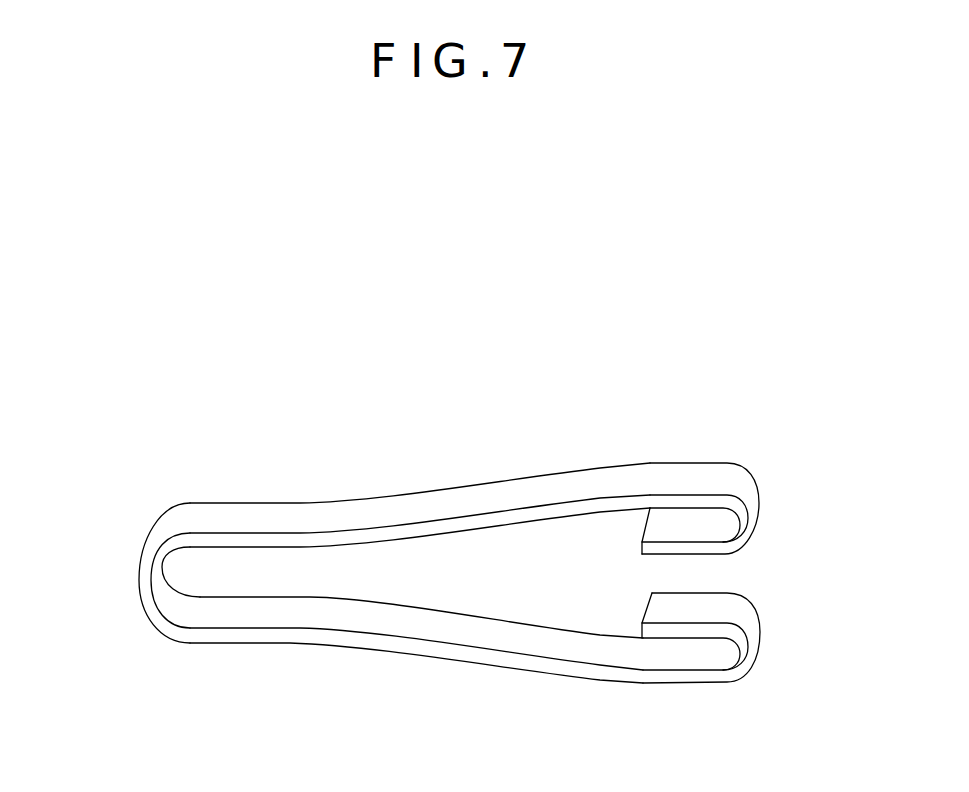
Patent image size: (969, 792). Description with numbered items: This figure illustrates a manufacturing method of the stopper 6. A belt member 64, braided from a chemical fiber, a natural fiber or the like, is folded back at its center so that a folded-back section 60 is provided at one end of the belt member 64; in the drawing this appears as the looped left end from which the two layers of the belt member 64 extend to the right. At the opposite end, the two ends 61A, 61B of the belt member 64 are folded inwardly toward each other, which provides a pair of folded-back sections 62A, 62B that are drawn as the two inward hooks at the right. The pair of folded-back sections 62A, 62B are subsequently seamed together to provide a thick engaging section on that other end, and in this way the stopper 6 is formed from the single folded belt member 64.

The stopper 6 is at (514, 353).
The folded-back section 60 is at (147, 578).
The belt member 64 is at (343, 513).
The end 61A is at (641, 552).
The end 61B is at (642, 630).
The folded-back section 62A is at (742, 526).
The folded-back section 62B is at (742, 657).